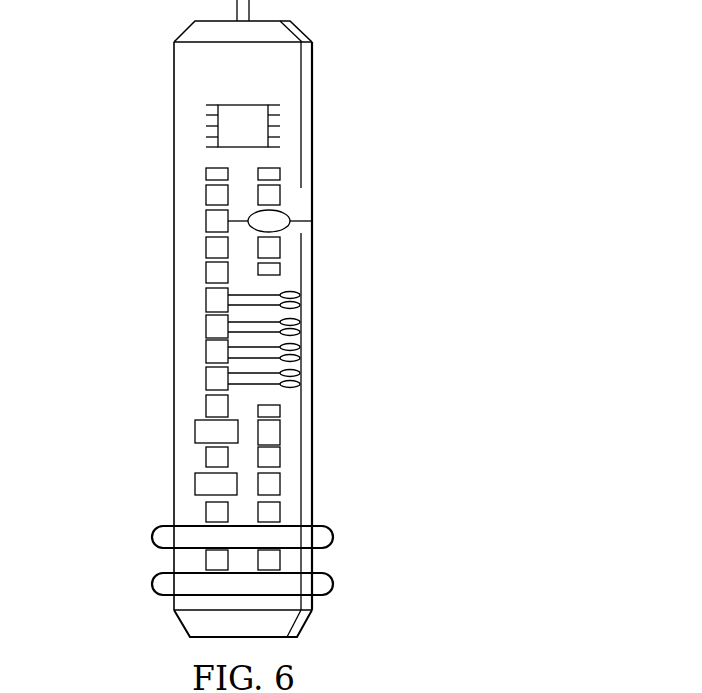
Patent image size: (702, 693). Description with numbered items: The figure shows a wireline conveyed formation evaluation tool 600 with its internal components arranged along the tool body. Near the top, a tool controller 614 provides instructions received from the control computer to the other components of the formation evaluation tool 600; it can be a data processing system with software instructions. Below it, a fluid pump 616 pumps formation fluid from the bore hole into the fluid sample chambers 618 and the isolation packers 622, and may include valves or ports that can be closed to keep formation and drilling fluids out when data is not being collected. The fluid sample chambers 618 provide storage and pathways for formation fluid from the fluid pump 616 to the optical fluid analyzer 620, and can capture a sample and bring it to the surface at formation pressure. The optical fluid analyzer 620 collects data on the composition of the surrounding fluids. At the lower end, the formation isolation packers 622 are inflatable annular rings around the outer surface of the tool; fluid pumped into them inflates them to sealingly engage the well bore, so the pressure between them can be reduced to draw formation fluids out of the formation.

The formation evaluation tool 600 is at (481, 243).
The tool controller 614 is at (205, 136).
The fluid pump 616 is at (283, 212).
The fluid sample chambers 618 is at (327, 295).
The optical fluid analyzer 620 is at (196, 432).
The formation isolation packers 622 is at (345, 522).